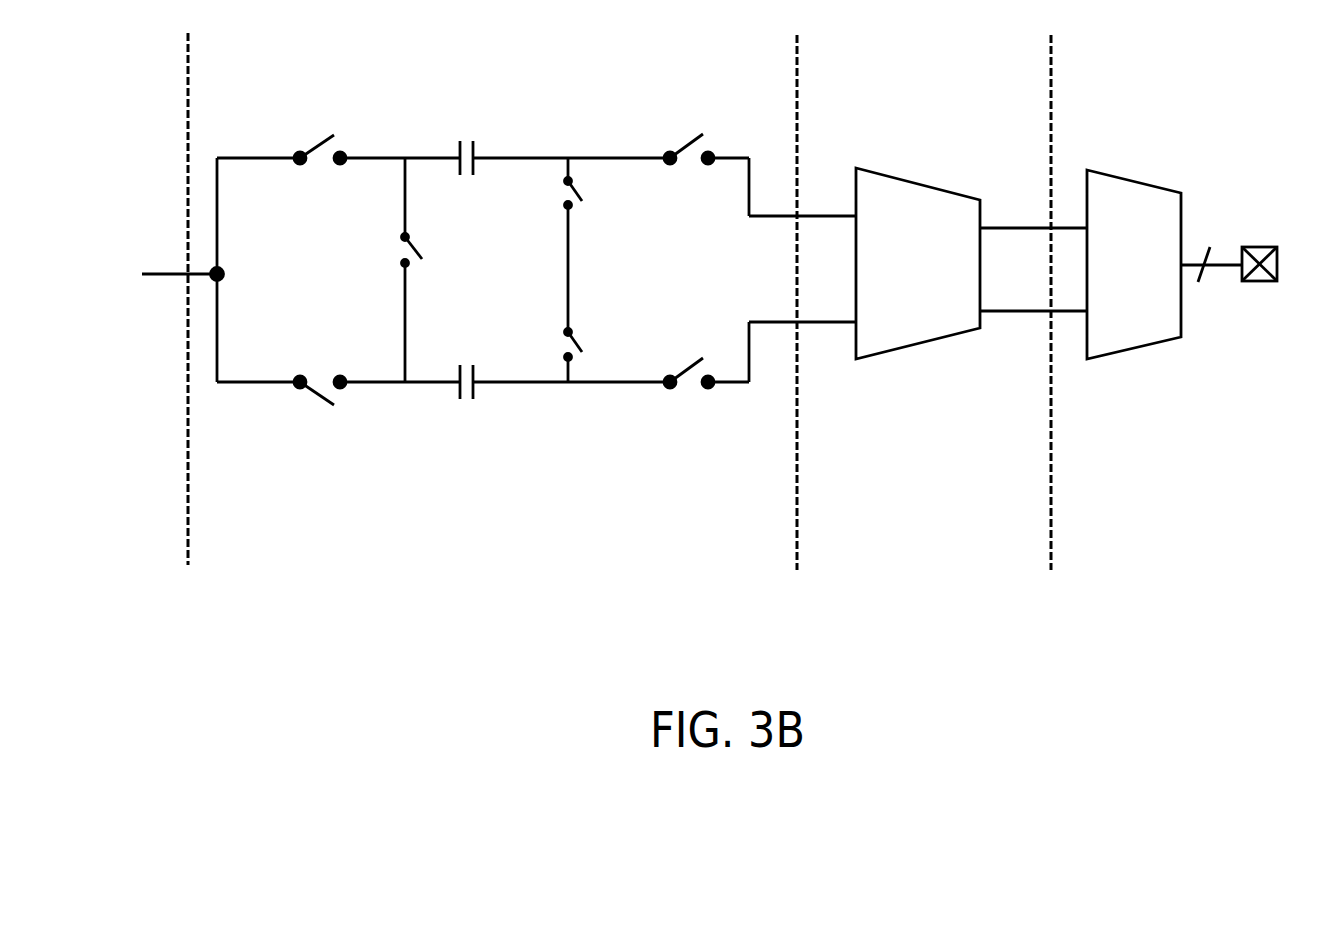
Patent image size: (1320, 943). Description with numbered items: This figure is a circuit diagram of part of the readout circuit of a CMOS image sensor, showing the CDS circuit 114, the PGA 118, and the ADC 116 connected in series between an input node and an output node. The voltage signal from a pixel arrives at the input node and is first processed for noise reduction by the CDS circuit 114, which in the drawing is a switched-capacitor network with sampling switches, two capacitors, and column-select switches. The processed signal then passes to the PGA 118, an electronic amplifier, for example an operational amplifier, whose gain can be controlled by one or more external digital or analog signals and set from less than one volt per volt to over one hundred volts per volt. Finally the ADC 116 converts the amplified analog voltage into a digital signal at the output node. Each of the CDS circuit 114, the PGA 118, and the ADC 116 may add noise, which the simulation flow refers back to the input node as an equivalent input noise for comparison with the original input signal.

The CDS circuit 114 is at (535, 507).
The programmable gain amplifier (PGA) 118 is at (921, 508).
The analog-to-digital converter (ADC) 116 is at (1168, 508).